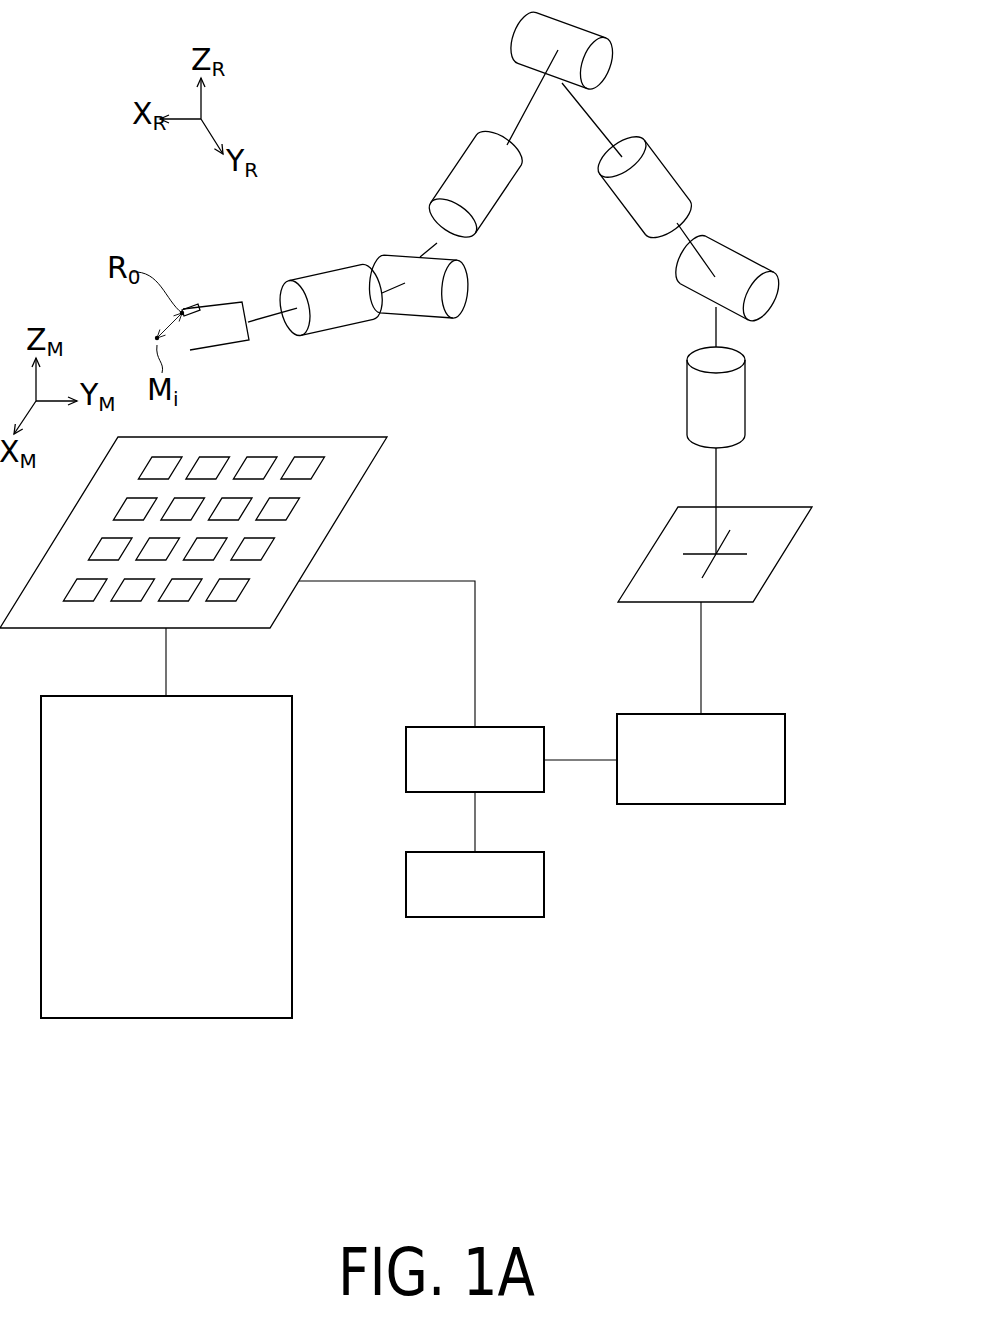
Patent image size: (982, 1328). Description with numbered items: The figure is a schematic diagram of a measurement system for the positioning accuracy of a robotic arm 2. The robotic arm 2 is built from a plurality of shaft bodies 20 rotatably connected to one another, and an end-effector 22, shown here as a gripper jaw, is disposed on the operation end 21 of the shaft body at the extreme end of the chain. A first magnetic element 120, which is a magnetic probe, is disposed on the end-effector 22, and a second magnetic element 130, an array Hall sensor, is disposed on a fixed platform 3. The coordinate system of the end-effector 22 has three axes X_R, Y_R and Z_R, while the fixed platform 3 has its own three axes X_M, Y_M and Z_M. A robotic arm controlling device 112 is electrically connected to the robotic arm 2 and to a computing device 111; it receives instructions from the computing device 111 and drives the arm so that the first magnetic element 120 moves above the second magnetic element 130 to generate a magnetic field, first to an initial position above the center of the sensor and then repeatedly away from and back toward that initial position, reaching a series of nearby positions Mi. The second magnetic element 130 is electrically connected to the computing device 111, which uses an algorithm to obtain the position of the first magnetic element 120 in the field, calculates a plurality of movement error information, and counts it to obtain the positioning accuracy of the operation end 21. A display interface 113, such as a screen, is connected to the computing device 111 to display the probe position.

The robotic arm 2 is at (555, 283).
The shaft bodies 20 is at (330, 288).
The operation end 21 is at (295, 323).
The end-effector 22 is at (260, 308).
The first magnetic element 120 is at (197, 303).
The second magnetic element 130 is at (340, 515).
The fixed platform 3 is at (165, 1019).
The computing device 111 is at (512, 726).
The robotic arm controlling device 112 is at (785, 757).
The display interface 113 is at (544, 883).